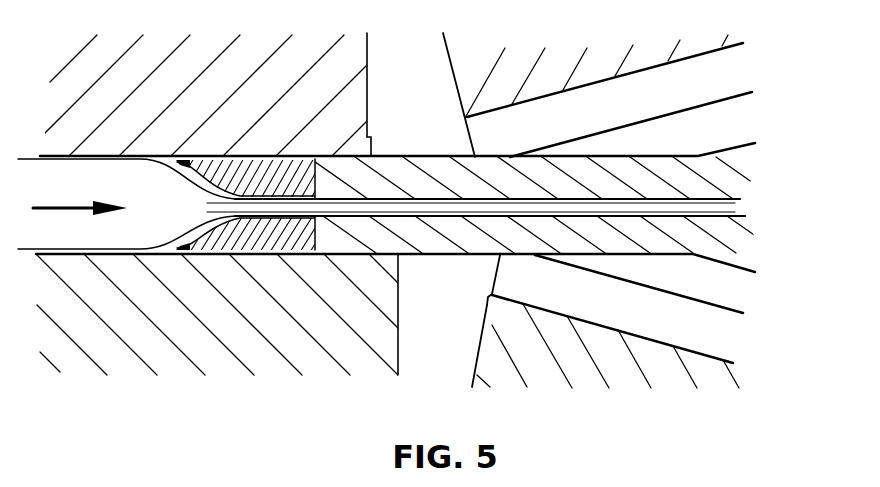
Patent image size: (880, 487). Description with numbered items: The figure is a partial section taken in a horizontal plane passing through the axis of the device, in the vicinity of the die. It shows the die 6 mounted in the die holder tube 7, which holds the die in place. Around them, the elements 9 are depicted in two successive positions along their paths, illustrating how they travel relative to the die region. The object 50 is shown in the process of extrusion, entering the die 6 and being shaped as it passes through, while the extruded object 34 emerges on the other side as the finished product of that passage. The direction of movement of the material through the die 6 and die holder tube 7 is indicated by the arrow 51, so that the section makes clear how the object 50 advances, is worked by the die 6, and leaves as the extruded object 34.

The elements 9 is at (300, 62).
The object 50 is at (100, 237).
The arrow 51 is at (60, 203).
The die 6 is at (225, 245).
The die holder tube 7 is at (362, 233).
The extruded object 34 is at (418, 207).